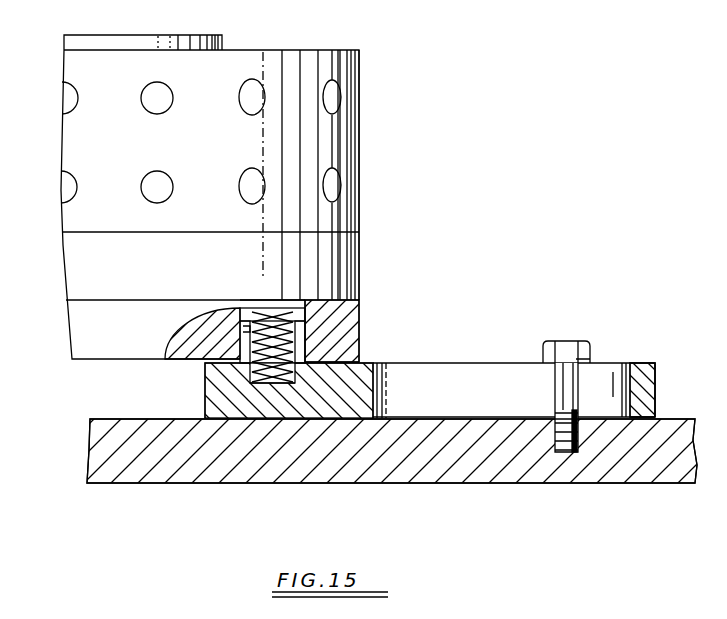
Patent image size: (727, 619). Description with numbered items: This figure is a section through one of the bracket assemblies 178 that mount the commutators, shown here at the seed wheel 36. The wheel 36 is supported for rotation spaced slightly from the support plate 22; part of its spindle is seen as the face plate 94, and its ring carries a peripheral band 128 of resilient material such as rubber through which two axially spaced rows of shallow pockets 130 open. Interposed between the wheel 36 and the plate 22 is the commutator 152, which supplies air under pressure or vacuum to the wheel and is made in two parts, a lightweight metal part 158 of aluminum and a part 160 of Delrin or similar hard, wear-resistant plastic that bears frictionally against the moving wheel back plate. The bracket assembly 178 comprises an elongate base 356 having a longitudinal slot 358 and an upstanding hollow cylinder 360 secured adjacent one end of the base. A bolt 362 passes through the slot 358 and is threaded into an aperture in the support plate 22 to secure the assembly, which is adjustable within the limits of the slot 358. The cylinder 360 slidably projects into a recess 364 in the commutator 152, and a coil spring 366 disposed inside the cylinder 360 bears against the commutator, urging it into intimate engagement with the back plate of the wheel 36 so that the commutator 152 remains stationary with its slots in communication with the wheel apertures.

The support plate 22 is at (440, 470).
The seed wheel 36 is at (353, 213).
The face plate 94 is at (197, 33).
The peripheral band 128 is at (355, 93).
The pockets 130 is at (254, 93).
The commutator 152 is at (350, 265).
The commutator metal part 158 is at (363, 314).
The commutator plastic part 160 is at (78, 275).
The bracket assembly 178 is at (458, 362).
The elongate base 356 is at (643, 365).
The longitudinal slot 358 is at (387, 388).
The hollow cylinder 360 is at (297, 342).
The bolt 362 is at (568, 347).
The recess 364 is at (240, 337).
The coil spring 366 is at (250, 363).